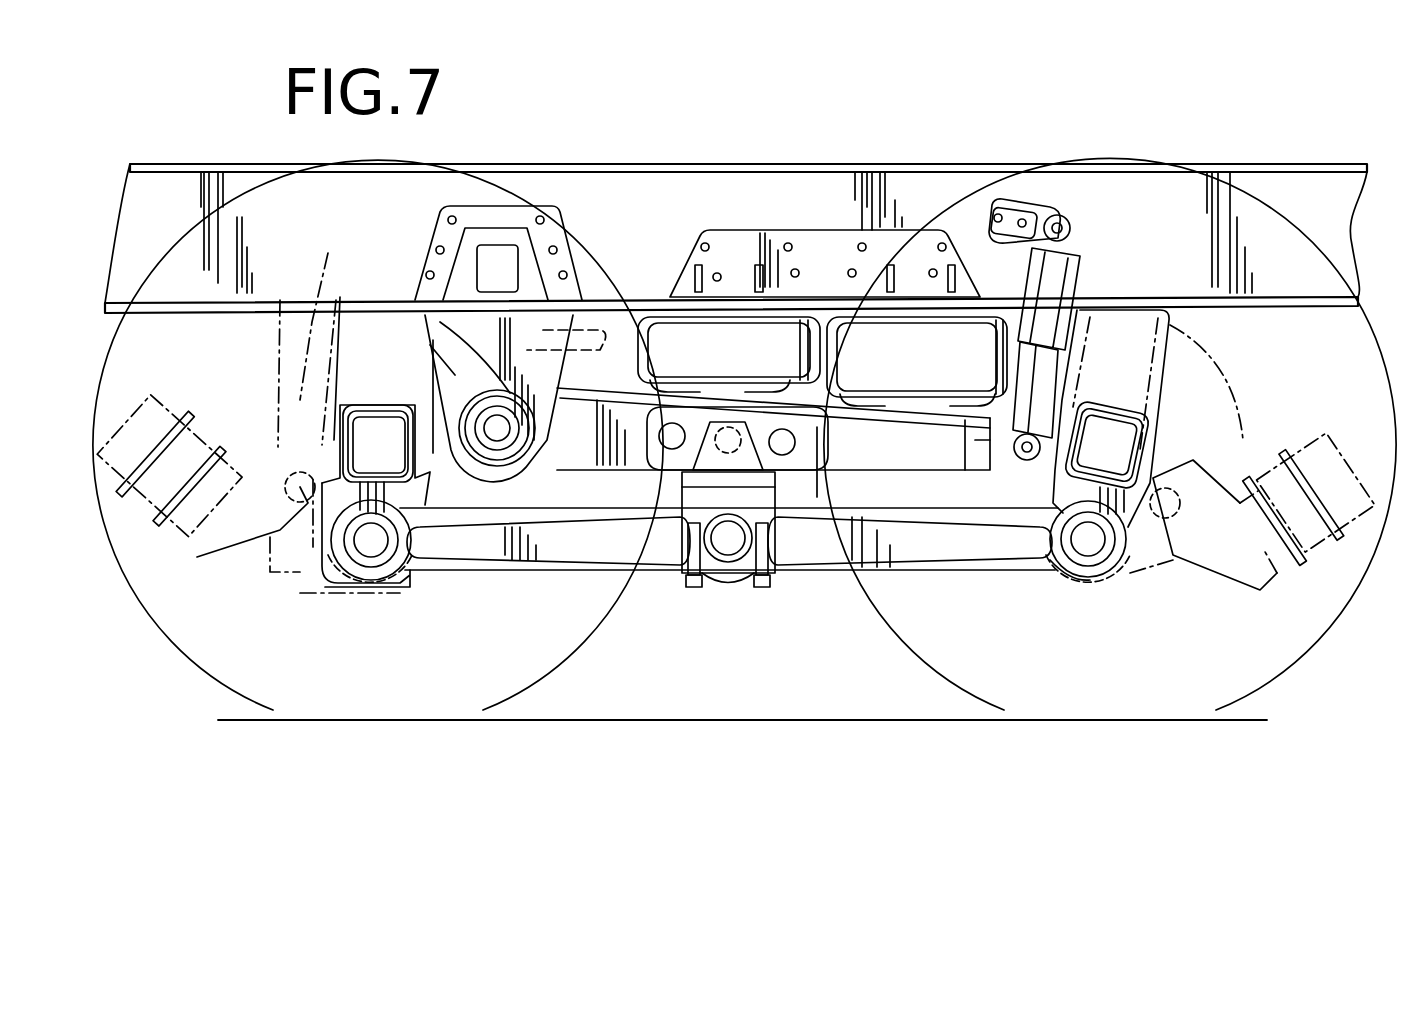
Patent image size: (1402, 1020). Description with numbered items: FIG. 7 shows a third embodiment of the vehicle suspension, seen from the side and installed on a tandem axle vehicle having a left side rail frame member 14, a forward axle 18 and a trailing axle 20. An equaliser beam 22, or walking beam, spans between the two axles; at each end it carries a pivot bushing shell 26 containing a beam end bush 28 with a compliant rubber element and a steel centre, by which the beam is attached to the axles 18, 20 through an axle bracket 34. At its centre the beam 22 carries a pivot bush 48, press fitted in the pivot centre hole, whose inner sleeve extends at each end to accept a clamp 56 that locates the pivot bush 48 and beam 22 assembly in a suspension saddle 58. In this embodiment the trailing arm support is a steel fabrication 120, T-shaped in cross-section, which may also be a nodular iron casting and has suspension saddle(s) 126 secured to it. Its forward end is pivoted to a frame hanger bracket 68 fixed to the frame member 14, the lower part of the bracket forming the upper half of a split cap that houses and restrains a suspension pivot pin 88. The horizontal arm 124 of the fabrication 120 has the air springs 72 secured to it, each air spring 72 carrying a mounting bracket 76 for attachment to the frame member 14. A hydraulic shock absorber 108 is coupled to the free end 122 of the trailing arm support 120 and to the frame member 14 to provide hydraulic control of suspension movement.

The left side rail frame member 14 is at (736, 207).
The forward axle 18 is at (309, 336).
The trailing axle 20 is at (1110, 434).
The equaliser beam 22 is at (729, 576).
The pivot bushing shell 26 is at (729, 573).
The beam end bush 28 is at (343, 587).
The axle bracket 34 is at (733, 451).
The pivot bush 48 is at (737, 575).
The clamp 56 is at (728, 558).
The suspension saddle 58 is at (677, 490).
The frame hanger bracket 68 is at (483, 344).
The air spring 72 is at (822, 327).
The mounting bracket 76 is at (825, 239).
The suspension pivot pin 88 is at (448, 418).
The hydraulic shock absorber 108 is at (1064, 329).
The steel fabrication 120 is at (773, 483).
The free end 122 is at (993, 462).
The horizontal arm 124 is at (773, 382).
The suspension saddle 126 is at (697, 456).